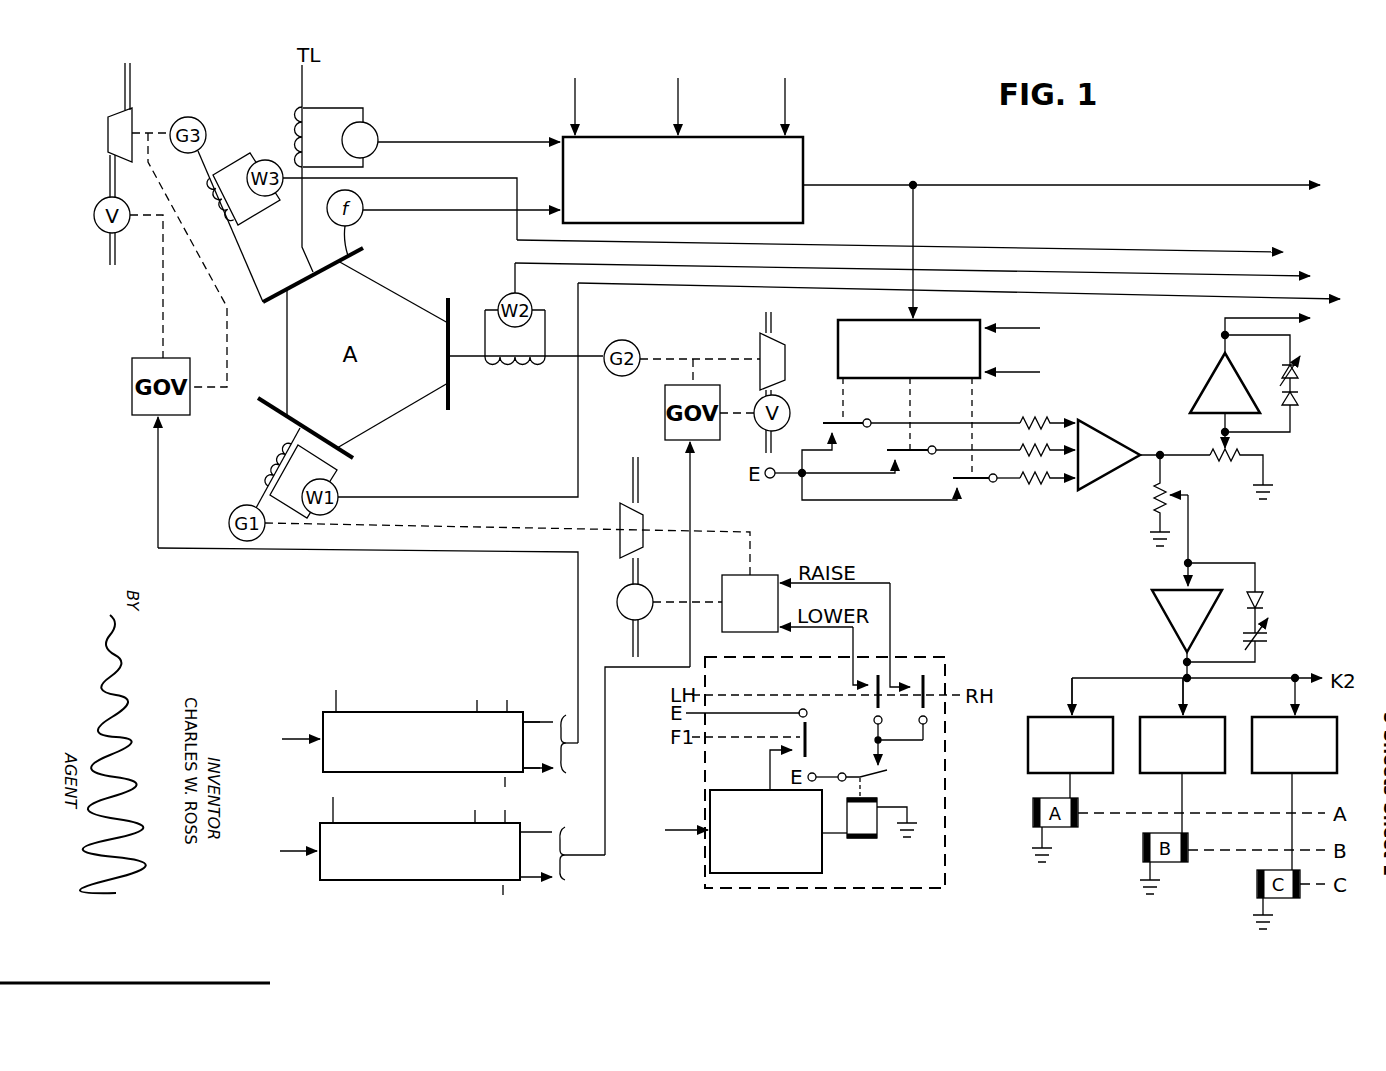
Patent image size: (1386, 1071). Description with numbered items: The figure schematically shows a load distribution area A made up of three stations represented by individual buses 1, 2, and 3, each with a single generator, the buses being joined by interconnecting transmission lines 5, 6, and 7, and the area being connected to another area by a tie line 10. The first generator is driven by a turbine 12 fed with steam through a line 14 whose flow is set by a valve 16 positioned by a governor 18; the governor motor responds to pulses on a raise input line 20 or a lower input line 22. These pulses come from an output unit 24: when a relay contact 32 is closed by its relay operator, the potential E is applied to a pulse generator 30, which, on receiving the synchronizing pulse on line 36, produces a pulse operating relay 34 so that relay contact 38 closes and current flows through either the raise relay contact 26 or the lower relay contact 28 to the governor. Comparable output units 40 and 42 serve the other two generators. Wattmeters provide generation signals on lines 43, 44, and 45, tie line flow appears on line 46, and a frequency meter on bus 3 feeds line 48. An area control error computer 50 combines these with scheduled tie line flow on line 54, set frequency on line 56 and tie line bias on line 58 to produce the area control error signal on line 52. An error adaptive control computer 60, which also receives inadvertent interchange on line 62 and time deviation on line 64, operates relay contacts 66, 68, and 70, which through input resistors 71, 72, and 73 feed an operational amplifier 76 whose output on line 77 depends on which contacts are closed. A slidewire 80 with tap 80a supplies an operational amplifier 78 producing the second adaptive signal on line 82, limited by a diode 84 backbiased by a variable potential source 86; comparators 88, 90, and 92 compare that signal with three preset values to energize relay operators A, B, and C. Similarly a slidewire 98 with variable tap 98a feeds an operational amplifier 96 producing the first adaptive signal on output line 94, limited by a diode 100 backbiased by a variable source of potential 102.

The bus 1 is at (320, 433).
The bus 2 is at (446, 348).
The bus 3 is at (302, 287).
The interconnecting transmission line 5 is at (287, 372).
The interconnecting transmission line 6 is at (395, 414).
The interconnecting transmission line 7 is at (387, 297).
The tie line 10 is at (302, 93).
The turbine 12 is at (640, 508).
The steam line 14 is at (640, 572).
The valve 16 is at (625, 592).
The governor 18 is at (768, 575).
The raise input line 20 is at (890, 597).
The lower input line 22 is at (852, 655).
The output unit 24 is at (925, 660).
The raise relay contact 26 is at (920, 706).
The lower relay contact 28 is at (866, 708).
The pulse generator 30 is at (822, 862).
The relay contact 32 is at (810, 752).
The relay operator 34 is at (880, 830).
The synchronizing pulse line 36 is at (688, 830).
The relay contact 38 is at (880, 775).
The output unit 40 is at (410, 823).
The output unit 42 is at (410, 712).
The line 43 is at (1190, 294).
The line 44 is at (1167, 274).
The line 45 is at (1212, 251).
The line 46 is at (468, 143).
The line 48 is at (478, 210).
The area control error computer 50 is at (803, 153).
The line 52 is at (1027, 190).
The line 54 is at (575, 100).
The line 56 is at (678, 100).
The line 58 is at (785, 100).
The error adaptive control computer 60 is at (945, 322).
The line 62 is at (1010, 332).
The line 64 is at (1012, 372).
The relay contact 66 is at (845, 428).
The relay contact 68 is at (905, 455).
The relay contact 70 is at (975, 483).
The input resistor 71 is at (1022, 420).
The input resistor 72 is at (1022, 448).
The input resistor 73 is at (1022, 478).
The operational amplifier 76 is at (1100, 428).
The line 77 is at (1146, 456).
The operational amplifier 78 is at (1152, 607).
The slidewire 80 is at (1152, 490).
The tap 80a is at (1188, 495).
The line 82 is at (1175, 660).
The diode 84 is at (1265, 600).
The variable potential source 86 is at (1270, 641).
The comparator 88 is at (1028, 735).
The comparator 90 is at (1140, 732).
The comparator 92 is at (1252, 732).
The output line 94 is at (1223, 319).
The operational amplifier 96 is at (1207, 383).
The slidewire 98 is at (1222, 470).
The variable tap 98a is at (1235, 440).
The diode 100 is at (1300, 404).
The variable source of potential 102 is at (1300, 368).